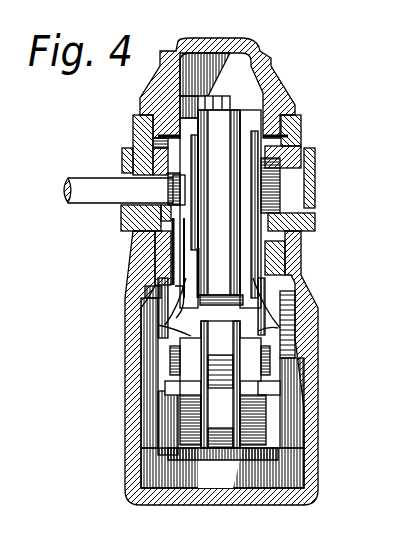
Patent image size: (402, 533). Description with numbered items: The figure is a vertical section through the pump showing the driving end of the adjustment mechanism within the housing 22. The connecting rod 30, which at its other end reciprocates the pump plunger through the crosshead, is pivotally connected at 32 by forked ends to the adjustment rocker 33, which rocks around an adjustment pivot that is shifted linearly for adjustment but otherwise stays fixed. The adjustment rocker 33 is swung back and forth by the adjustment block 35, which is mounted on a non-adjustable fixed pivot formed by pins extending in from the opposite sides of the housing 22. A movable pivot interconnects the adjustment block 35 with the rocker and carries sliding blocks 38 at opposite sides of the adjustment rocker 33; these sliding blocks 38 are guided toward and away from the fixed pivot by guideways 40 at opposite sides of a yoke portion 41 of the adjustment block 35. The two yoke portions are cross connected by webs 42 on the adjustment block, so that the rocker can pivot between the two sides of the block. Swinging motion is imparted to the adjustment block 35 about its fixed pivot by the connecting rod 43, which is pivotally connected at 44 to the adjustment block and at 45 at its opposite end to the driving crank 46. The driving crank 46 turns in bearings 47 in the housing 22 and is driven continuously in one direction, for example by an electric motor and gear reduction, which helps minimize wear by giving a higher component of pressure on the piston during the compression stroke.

The housing 22 is at (300, 492).
The connecting rod 30 is at (260, 452).
The pivotal connection 32 is at (258, 403).
The adjustment rocker 33 is at (262, 415).
The adjustment block 35 is at (175, 277).
The sliding blocks 38 is at (185, 350).
The guideways 40 is at (190, 314).
The yoke portion 41 is at (160, 378).
The webs 42 is at (237, 302).
The connecting rod 43 is at (287, 212).
The pivotal connection 44 is at (173, 242).
The pivotal connection 45 is at (240, 108).
The driving crank 46 is at (292, 112).
The bearings 47 is at (113, 152).